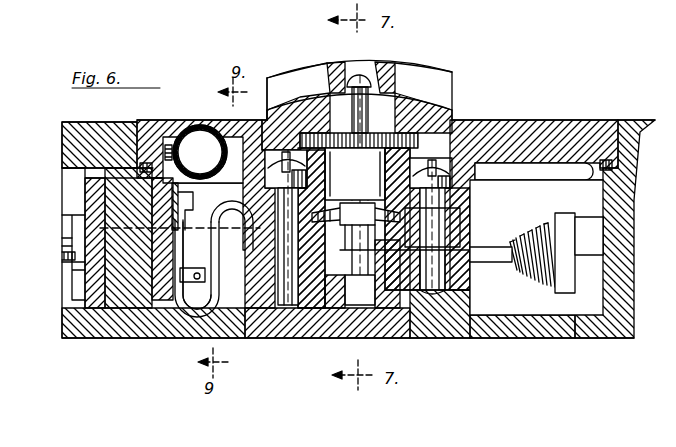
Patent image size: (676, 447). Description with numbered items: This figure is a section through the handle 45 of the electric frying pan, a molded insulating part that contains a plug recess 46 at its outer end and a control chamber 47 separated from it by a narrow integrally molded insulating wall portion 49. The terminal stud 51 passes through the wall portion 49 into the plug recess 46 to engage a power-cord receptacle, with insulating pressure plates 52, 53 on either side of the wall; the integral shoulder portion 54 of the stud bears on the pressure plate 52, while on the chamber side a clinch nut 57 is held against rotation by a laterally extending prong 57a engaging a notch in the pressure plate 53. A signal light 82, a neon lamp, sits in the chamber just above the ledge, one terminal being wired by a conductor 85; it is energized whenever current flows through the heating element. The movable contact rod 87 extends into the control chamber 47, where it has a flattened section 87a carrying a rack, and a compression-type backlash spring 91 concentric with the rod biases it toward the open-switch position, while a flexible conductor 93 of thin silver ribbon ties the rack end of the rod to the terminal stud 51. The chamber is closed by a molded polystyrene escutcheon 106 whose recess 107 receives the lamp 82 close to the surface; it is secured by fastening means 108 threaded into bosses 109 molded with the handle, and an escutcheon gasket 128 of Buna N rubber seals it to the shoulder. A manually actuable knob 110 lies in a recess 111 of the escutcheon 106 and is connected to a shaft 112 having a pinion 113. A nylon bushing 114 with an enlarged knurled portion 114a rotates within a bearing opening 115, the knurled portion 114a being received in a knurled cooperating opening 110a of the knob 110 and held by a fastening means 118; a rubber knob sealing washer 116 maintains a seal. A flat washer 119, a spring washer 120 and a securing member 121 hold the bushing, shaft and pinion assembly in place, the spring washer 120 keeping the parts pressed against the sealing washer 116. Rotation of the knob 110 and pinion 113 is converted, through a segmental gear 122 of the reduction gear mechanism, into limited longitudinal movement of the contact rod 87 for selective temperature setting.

The handle 45 is at (636, 165).
The plug recess 46 is at (180, 235).
The control chamber 47 is at (530, 163).
The insulating wall portion 49 is at (130, 288).
The terminal stud 51 is at (70, 252).
The insulating pressure plate 52 is at (92, 290).
The insulating pressure plate 53 is at (164, 300).
The shoulder portion 54 is at (72, 215).
The clinch nut 57 is at (180, 270).
The laterally extending prong 57a is at (180, 195).
The signal light 82 is at (203, 154).
The conductor 85 is at (212, 312).
The contact rod 87 is at (545, 215).
The flattened section 87a is at (491, 262).
The backlash spring 91 is at (560, 278).
The flexible conductor 93 is at (214, 265).
The escutcheon 106 is at (170, 112).
The recess 107 is at (198, 124).
The fastening means 108 is at (296, 308).
The boss 109 is at (262, 250).
The knob 110 is at (395, 85).
The cooperating opening 110a is at (297, 84).
The recess 111 is at (276, 80).
The shaft 112 is at (398, 240).
The pinion 113 is at (333, 320).
The nylon bushing 114 is at (358, 220).
The knurled portion 114a is at (423, 83).
The bearing opening 115 is at (355, 175).
The knob sealing washer 116 is at (478, 172).
The fastening means 118 is at (358, 80).
The flat washer 119 is at (356, 226).
The spring washer 120 is at (458, 246).
The securing member 121 is at (440, 314).
The segmental gear 122 is at (430, 336).
The escutcheon gasket 128 is at (62, 170).